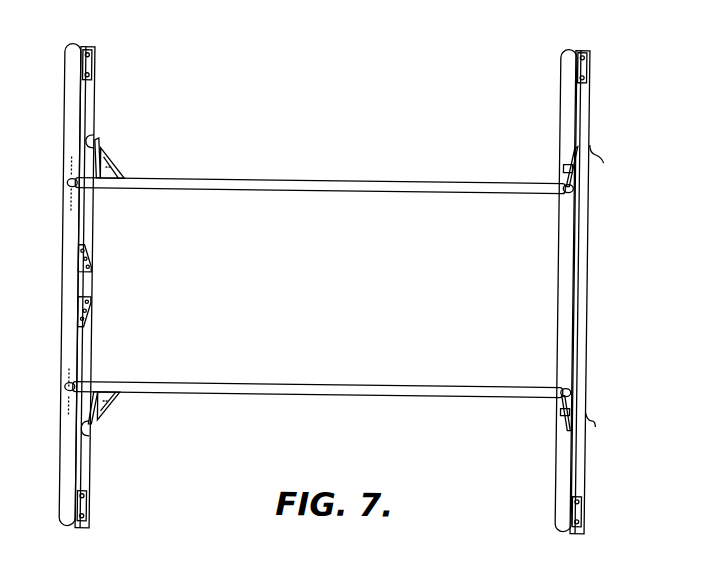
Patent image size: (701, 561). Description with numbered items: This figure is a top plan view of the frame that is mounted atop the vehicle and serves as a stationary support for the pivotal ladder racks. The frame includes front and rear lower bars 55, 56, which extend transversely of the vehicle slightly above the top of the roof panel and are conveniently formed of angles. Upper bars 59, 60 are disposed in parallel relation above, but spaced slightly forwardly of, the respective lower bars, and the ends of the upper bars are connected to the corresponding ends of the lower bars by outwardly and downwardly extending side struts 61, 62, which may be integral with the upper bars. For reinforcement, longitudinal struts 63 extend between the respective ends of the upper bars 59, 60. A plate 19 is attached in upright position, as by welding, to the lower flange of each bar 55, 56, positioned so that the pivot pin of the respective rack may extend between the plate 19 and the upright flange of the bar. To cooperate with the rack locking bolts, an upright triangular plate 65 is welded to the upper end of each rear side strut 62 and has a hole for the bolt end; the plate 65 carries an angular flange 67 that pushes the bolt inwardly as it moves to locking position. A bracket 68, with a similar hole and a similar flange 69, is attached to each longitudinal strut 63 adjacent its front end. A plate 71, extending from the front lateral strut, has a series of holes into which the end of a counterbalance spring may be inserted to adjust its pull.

The plate 19 is at (92, 142).
The front lower bar 55 is at (94, 230).
The rear lower bar 56 is at (587, 241).
The upper bar 59 is at (65, 290).
The upper bar 60 is at (562, 270).
The side strut 61 is at (63, 93).
The side strut 62 is at (559, 98).
The longitudinal strut 63 is at (362, 181).
The upright triangular plate 65 is at (562, 165).
The angular flange 67 is at (570, 146).
The bracket 68 is at (117, 169).
The flange 69 is at (97, 152).
The plate 71 is at (92, 272).